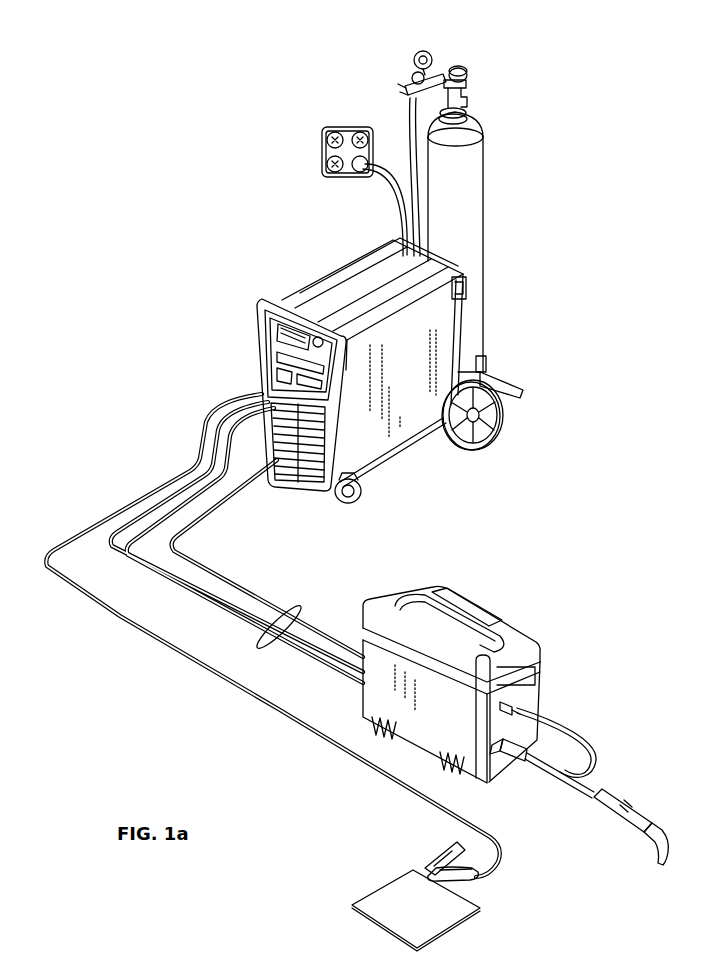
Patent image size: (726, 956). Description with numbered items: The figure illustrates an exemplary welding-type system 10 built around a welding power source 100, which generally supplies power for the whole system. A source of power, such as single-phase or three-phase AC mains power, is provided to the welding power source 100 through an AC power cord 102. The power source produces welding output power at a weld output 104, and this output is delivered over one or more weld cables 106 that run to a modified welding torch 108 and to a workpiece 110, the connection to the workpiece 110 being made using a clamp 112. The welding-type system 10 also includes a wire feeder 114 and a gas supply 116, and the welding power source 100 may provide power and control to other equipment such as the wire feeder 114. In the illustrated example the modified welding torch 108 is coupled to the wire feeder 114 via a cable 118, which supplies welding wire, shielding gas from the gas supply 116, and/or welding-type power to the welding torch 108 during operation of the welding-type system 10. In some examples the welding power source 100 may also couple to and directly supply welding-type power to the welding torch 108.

The welding-type system 10 is at (222, 240).
The welding power source 100 is at (375, 258).
The AC power cord 102 is at (387, 158).
The weld output 104 is at (262, 387).
The weld cables 106 is at (70, 543).
The modified welding torch 108 is at (624, 808).
The workpiece 110 is at (433, 913).
The clamp 112 is at (450, 851).
The wire feeder 114 is at (501, 590).
The gas supply 116 is at (478, 183).
The cable 118 is at (547, 775).